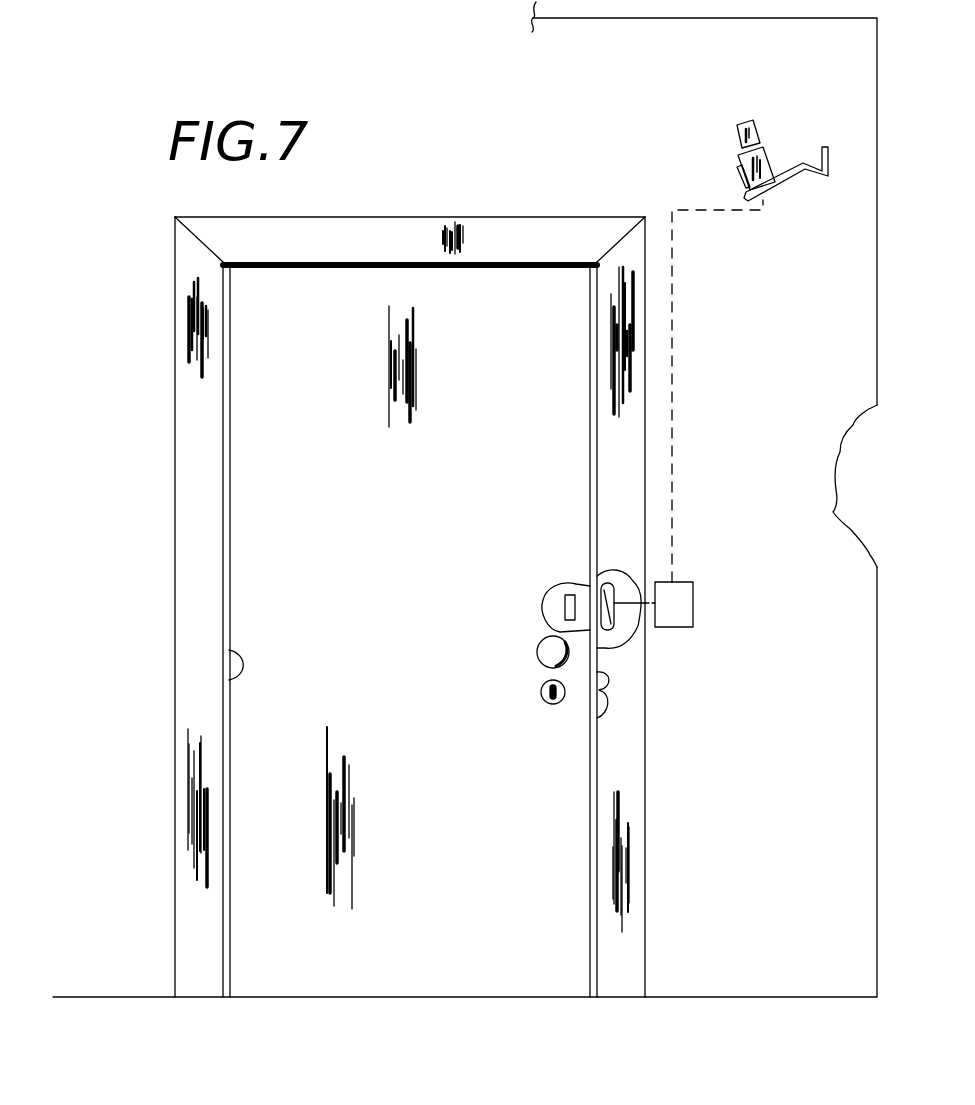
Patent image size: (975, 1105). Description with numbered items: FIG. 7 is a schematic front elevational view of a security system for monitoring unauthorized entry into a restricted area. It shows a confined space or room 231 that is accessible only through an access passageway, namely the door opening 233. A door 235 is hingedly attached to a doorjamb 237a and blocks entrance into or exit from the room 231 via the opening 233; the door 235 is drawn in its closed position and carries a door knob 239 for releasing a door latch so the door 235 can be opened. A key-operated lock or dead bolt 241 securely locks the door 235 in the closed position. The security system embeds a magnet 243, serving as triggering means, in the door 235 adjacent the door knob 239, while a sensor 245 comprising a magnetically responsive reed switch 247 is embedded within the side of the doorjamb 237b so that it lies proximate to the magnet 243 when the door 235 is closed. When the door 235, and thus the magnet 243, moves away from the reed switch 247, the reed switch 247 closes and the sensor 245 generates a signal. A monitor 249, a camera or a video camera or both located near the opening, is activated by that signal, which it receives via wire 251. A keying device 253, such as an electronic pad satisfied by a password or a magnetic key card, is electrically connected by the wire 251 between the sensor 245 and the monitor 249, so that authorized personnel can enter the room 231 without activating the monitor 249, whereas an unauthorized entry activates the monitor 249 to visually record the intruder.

The room 231 is at (877, 462).
The door opening 233 is at (227, 678).
The door 235 is at (247, 486).
The doorjamb 237a is at (198, 596).
The doorjamb 237b is at (623, 765).
The door knob 239 is at (545, 667).
The dead bolt 241 is at (568, 690).
The magnet 243 is at (545, 607).
The sensor 245 is at (582, 582).
The reed switch 247 is at (590, 580).
The monitor 249 is at (720, 135).
The wire 251 is at (673, 372).
The keying device 253 is at (693, 612).